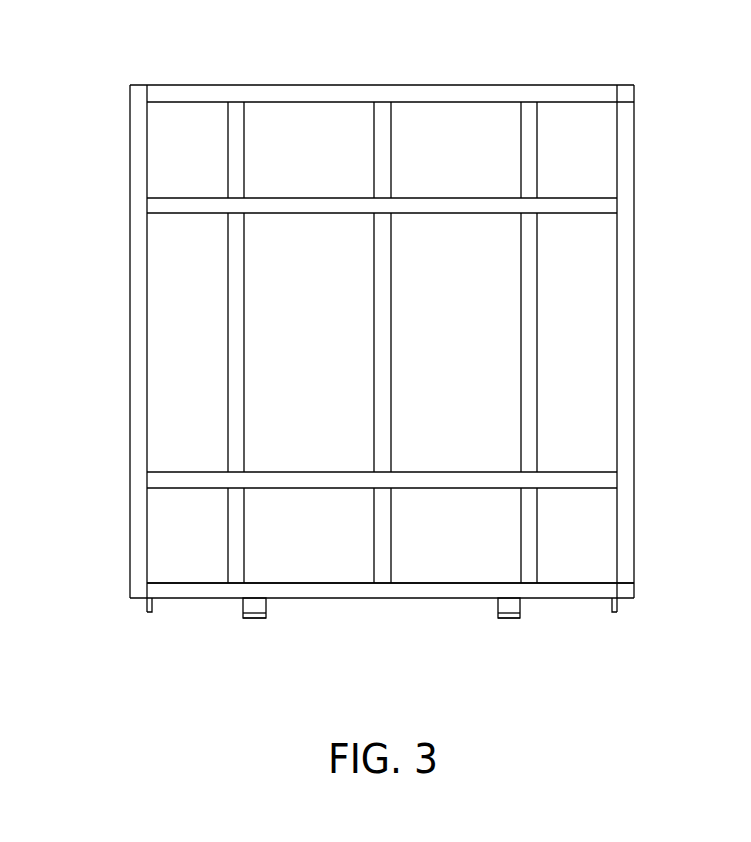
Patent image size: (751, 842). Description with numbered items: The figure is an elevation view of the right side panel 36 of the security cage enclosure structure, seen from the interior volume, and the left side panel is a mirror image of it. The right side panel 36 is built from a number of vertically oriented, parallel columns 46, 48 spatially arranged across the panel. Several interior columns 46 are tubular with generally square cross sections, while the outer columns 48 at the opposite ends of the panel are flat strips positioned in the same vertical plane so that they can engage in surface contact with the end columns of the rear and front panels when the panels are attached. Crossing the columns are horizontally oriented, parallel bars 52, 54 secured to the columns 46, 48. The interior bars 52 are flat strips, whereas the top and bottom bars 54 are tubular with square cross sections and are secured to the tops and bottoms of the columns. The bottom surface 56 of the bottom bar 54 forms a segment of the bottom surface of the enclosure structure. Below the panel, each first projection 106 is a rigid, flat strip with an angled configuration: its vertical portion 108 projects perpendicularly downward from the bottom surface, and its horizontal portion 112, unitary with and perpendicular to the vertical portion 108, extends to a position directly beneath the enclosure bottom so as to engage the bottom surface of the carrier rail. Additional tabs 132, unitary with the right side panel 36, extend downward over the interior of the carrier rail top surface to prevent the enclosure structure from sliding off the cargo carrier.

The right side panel 36 is at (652, 369).
The interior columns 46 is at (380, 353).
The outer columns 48 is at (137, 290).
The interior bars 52 is at (222, 197).
The top and bottom bars 54 is at (200, 93).
The bottom surface of the bottom bar 56 is at (415, 599).
The first projection 106 is at (251, 630).
The vertical portion 108 is at (250, 612).
The horizontal portion 112 is at (263, 618).
The additional tabs 132 is at (147, 604).